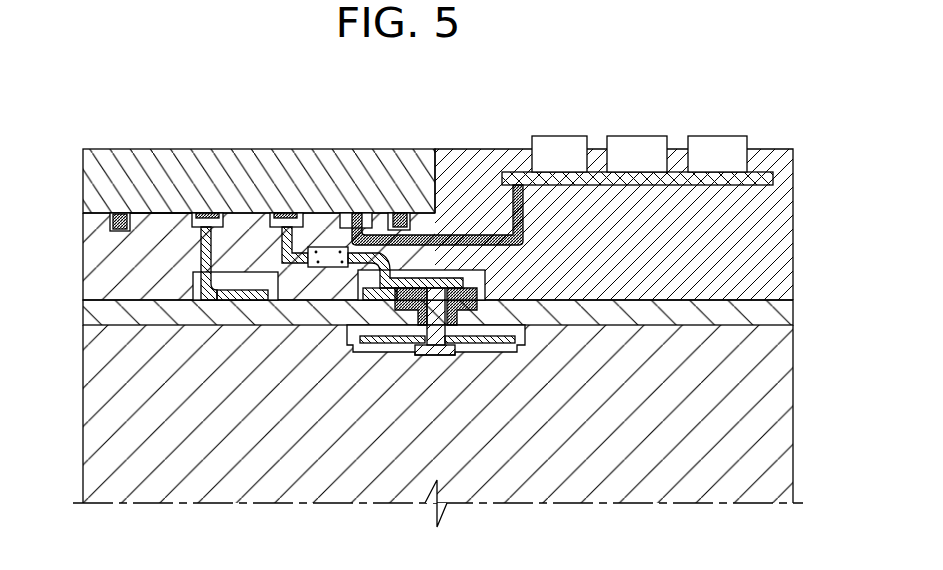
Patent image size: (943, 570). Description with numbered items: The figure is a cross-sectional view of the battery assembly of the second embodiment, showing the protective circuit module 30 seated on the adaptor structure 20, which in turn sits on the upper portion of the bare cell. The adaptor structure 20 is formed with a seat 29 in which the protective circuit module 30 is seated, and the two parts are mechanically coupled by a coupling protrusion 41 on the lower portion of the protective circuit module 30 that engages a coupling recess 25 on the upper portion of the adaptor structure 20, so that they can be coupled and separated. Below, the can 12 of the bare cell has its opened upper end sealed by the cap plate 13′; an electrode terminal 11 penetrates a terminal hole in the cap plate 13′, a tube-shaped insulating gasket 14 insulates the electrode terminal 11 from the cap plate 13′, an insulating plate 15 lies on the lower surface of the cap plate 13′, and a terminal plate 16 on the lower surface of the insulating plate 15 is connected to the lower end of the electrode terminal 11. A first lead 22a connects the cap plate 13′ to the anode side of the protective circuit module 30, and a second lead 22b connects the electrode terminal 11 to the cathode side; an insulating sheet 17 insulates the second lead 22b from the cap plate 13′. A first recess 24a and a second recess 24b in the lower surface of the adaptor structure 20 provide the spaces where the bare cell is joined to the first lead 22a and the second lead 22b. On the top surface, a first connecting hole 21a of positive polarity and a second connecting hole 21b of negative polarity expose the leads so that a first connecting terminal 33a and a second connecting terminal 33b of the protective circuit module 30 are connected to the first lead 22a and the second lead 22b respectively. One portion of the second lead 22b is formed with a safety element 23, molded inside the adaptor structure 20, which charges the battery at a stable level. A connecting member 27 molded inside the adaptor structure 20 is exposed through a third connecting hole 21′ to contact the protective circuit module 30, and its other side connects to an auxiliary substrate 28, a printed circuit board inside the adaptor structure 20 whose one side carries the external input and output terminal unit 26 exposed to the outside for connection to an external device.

The electrode terminal 11 is at (440, 350).
The can 12 is at (88, 448).
The cap plate 13′ is at (88, 313).
The insulating gasket 14 is at (502, 272).
The insulating plate 15 is at (500, 345).
The terminal plate 16 is at (460, 318).
The insulating sheet 17 is at (380, 296).
The adaptor structure 20 is at (88, 266).
The first connecting hole 21a is at (193, 214).
The second connecting hole 21b is at (272, 214).
The third connecting hole 21′ is at (347, 222).
The first lead 22a is at (230, 295).
The second lead 22b is at (390, 227).
The safety element 23 is at (327, 257).
The first recess 24a is at (198, 286).
The second recess 24b is at (480, 275).
The coupling recess 25 is at (112, 210).
The external input and output terminal unit 26 is at (713, 142).
The connecting member 27 is at (376, 226).
The auxiliary substrate 28 is at (768, 177).
The seat 29 is at (143, 212).
The protective circuit module 30 is at (88, 173).
The first connecting terminal 33a is at (207, 216).
The second connecting terminal 33b is at (288, 215).
The coupling protrusion 41 is at (113, 218).